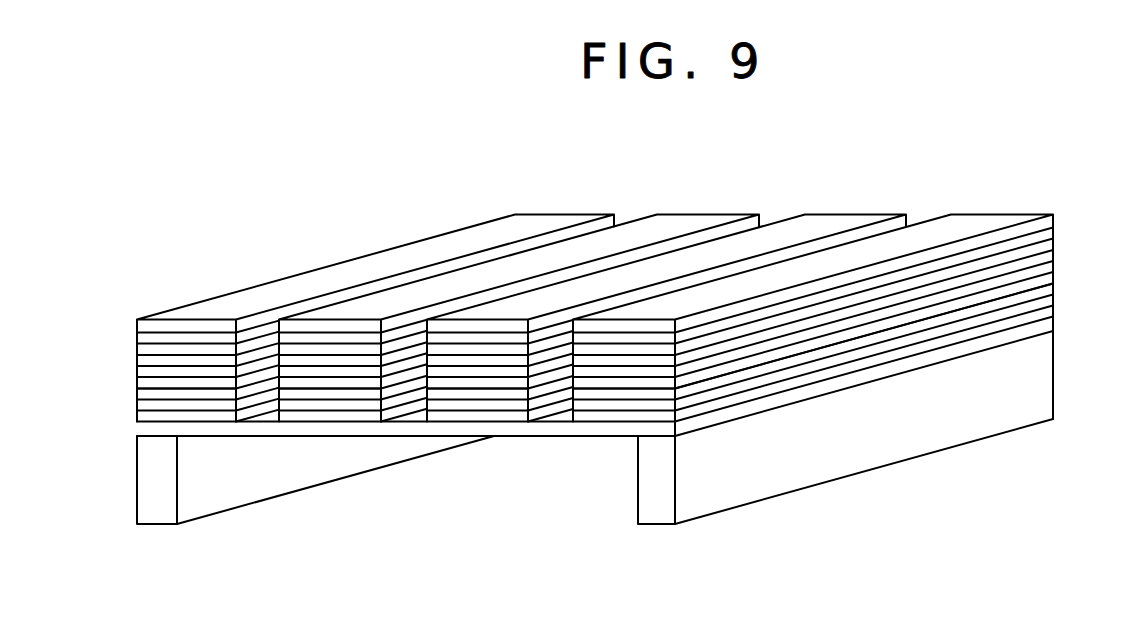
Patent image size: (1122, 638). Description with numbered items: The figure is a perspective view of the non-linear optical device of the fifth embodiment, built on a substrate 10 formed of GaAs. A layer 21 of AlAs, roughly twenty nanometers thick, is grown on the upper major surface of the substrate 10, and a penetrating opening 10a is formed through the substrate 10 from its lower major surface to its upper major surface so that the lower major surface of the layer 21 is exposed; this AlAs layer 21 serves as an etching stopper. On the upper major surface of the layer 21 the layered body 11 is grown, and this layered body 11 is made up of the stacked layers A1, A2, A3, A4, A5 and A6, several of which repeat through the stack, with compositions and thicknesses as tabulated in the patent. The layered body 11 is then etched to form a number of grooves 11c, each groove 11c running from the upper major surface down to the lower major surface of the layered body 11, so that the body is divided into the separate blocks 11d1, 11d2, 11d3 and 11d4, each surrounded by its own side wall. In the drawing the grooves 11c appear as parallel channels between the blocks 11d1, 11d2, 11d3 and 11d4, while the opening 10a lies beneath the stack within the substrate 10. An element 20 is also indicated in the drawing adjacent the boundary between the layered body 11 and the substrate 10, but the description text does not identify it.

The substrate 10 is at (707, 493).
The penetrating opening 10a is at (598, 472).
The layered body 11 is at (577, 334).
The groove 11c is at (629, 220).
The block 11d1 is at (403, 257).
The block 11d2 is at (568, 250).
The block 11d3 is at (747, 243).
The block 11d4 is at (878, 248).
The adhesive layer 20 is at (540, 432).
The layer of AlAs 21 is at (1035, 323).
The layer A1 is at (147, 328).
The layer A2 is at (147, 338).
The layer A3 is at (147, 353).
The layer A4 is at (147, 362).
The layer A5 is at (147, 373).
The layer A6 is at (147, 383).